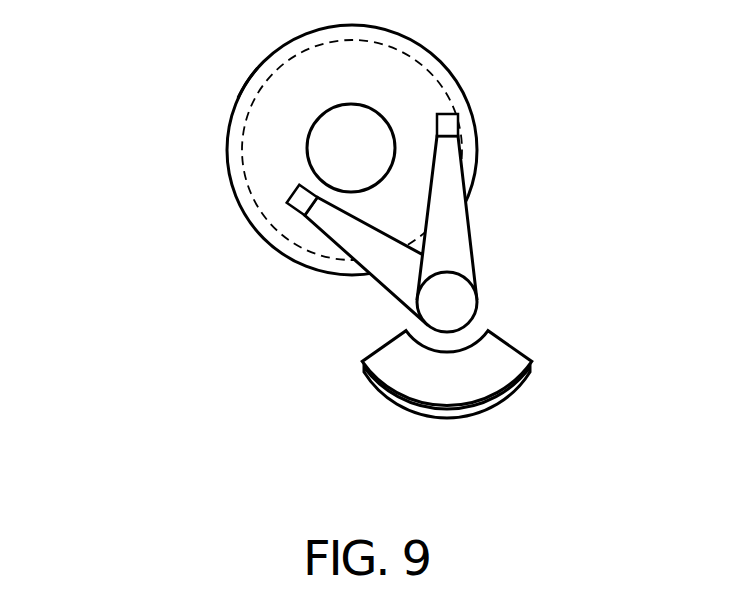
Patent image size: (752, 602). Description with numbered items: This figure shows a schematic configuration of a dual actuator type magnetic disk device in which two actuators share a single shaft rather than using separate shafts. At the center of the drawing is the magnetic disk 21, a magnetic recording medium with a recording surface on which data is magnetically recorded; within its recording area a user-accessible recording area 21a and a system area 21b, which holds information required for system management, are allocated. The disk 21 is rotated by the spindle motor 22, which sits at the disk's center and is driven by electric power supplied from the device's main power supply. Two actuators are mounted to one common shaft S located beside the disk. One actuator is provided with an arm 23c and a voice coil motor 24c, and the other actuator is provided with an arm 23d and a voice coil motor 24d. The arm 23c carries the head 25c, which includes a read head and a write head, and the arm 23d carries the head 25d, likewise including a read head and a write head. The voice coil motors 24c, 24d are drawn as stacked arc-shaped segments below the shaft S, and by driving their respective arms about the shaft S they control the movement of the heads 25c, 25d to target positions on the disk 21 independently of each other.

The magnetic disk 21 is at (420, 45).
The recording area 21a is at (248, 118).
The system area 21b is at (258, 68).
The spindle motor 22 is at (328, 108).
The arm 23c is at (473, 253).
The arm 23d is at (383, 286).
The voice coil motor 24c is at (413, 399).
The voice coil motor 24d is at (465, 418).
The head 25c is at (459, 124).
The head 25d is at (287, 193).
The shaft S is at (478, 310).